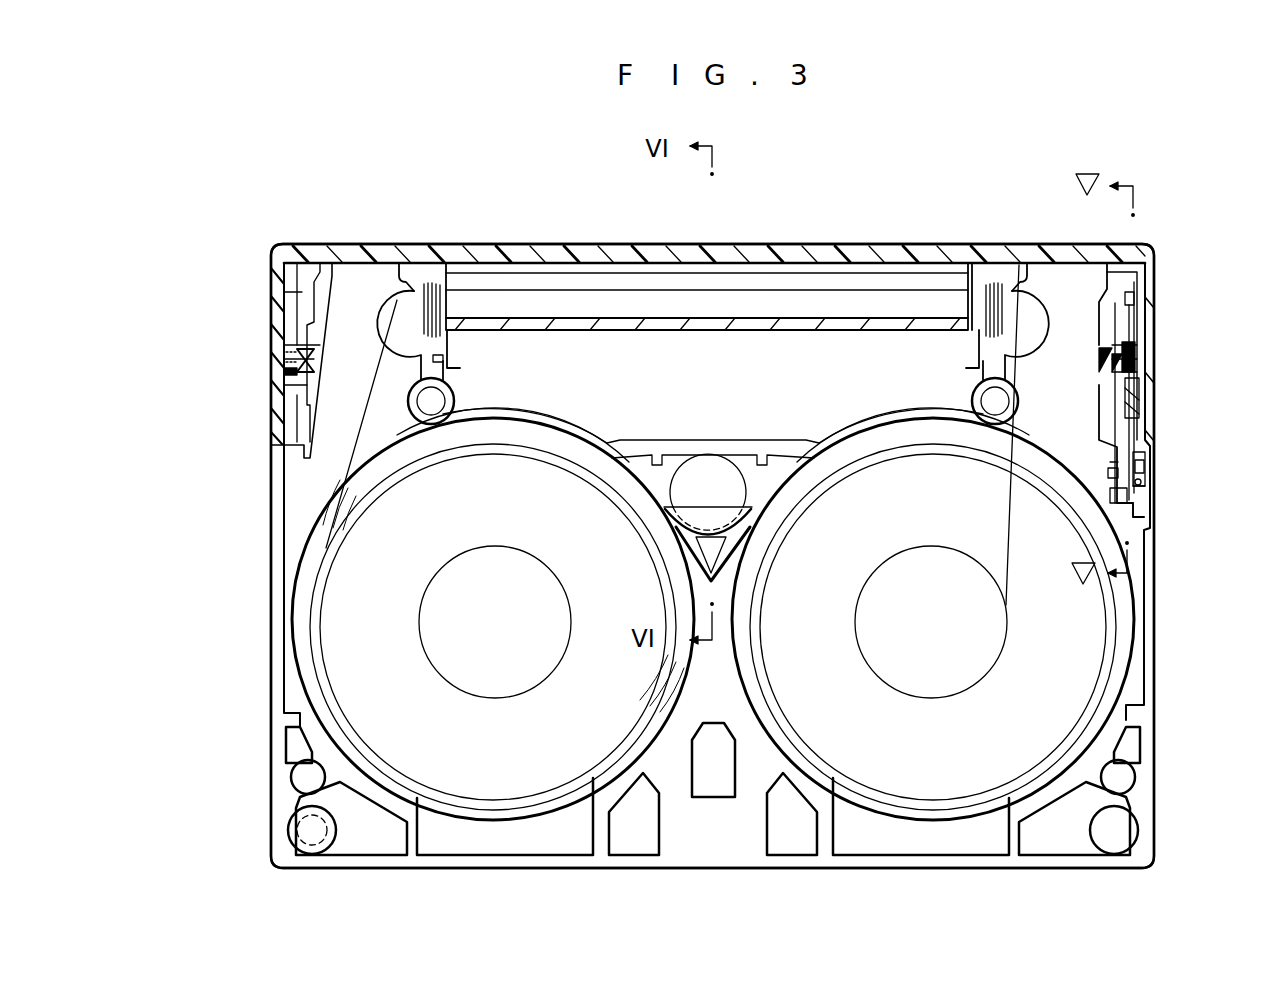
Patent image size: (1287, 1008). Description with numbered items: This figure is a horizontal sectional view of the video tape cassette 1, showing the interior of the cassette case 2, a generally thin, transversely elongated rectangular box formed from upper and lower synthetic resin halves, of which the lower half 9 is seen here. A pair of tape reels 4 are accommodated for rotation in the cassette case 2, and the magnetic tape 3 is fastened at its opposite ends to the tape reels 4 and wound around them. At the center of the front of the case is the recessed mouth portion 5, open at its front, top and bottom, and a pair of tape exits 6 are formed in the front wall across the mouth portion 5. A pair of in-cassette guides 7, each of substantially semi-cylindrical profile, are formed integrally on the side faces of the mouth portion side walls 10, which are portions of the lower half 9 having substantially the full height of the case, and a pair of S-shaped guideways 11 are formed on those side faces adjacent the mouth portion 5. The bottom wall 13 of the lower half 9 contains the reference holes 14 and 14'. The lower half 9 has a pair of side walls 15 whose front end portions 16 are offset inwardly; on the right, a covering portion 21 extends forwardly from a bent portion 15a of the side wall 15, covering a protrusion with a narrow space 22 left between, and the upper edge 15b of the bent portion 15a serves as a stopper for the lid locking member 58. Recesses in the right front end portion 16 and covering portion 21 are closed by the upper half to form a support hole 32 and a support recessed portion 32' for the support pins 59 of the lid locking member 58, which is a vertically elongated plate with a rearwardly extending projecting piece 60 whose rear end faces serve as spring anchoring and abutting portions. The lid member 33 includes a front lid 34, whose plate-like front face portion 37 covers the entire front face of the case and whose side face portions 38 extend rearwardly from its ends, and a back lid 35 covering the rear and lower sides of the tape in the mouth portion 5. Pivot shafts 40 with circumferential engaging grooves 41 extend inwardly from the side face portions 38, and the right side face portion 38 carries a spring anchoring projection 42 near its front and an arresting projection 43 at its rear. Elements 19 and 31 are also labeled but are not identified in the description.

The video tape cassette 1 is at (1172, 198).
The cassette case 2 is at (1156, 628).
The magnetic tape 3 is at (722, 248).
The tape reels 4 is at (497, 815).
The mouth portion 5 is at (757, 380).
The tape exits 6 is at (352, 262).
The in-cassette guides 7 is at (408, 310).
The lower half 9 is at (1127, 680).
The mouth portion side walls 10 is at (447, 338).
The guideways 11 is at (444, 362).
The bottom wall 13 is at (718, 825).
The reference hole 14 is at (977, 423).
The reference hole 14' is at (438, 434).
The side walls 15 is at (271, 517).
The bent portion 15a is at (1135, 502).
The upper edge of bent portion 15b is at (1128, 499).
The side wall front end portions 16 is at (308, 295).
The lock member 19 is at (314, 358).
The covering portion 21 is at (1147, 466).
The narrow space 22 is at (1136, 487).
The slider 31 is at (1136, 345).
The support hole 32 is at (1089, 457).
The support recessed portion 32' is at (1176, 453).
The lid member 33 is at (535, 203).
The front lid 34 is at (585, 248).
The back lid 35 is at (617, 331).
The front face portion 37 is at (652, 248).
The side face portions 38 is at (271, 310).
The pivot shafts 40 is at (284, 358).
The engaging grooves 41 is at (296, 382).
The spring anchoring projection 42 is at (1125, 297).
The arresting projection 43 is at (1130, 405).
The lid locking member 58 is at (1141, 483).
The support pins 59 is at (1113, 463).
The projecting piece 60 is at (1127, 487).